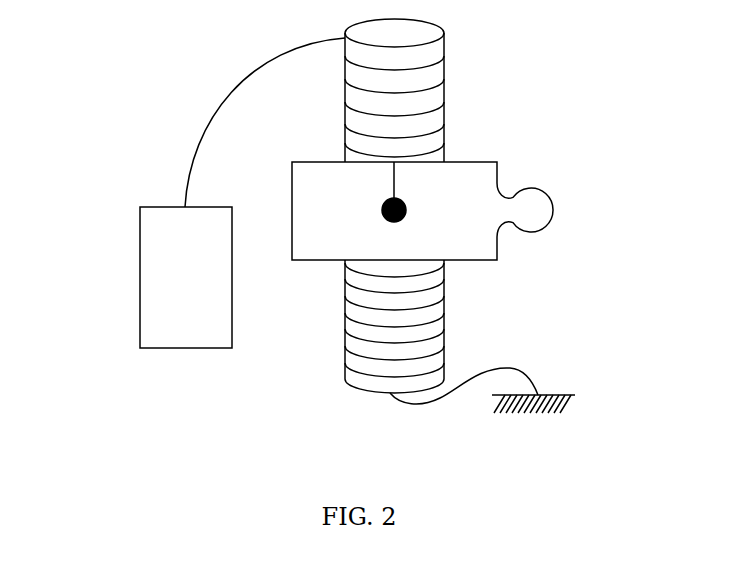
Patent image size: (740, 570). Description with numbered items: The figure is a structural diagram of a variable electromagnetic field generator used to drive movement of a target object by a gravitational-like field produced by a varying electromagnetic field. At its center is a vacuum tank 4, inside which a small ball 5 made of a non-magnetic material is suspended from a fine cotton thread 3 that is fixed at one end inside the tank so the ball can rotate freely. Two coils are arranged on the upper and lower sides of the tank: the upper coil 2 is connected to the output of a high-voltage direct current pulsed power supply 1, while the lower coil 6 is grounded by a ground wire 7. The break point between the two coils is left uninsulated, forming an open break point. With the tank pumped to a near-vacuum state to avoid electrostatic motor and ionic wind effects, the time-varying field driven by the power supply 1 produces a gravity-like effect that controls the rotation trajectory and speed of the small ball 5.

The high-voltage direct current pulsed power supply 1 is at (160, 262).
The upper coil 2 is at (433, 87).
The fine cotton thread 3 is at (390, 186).
The vacuum tank 4 is at (498, 245).
The small ball 5 is at (405, 202).
The lower coil 6 is at (360, 340).
The ground wire 7 is at (515, 410).